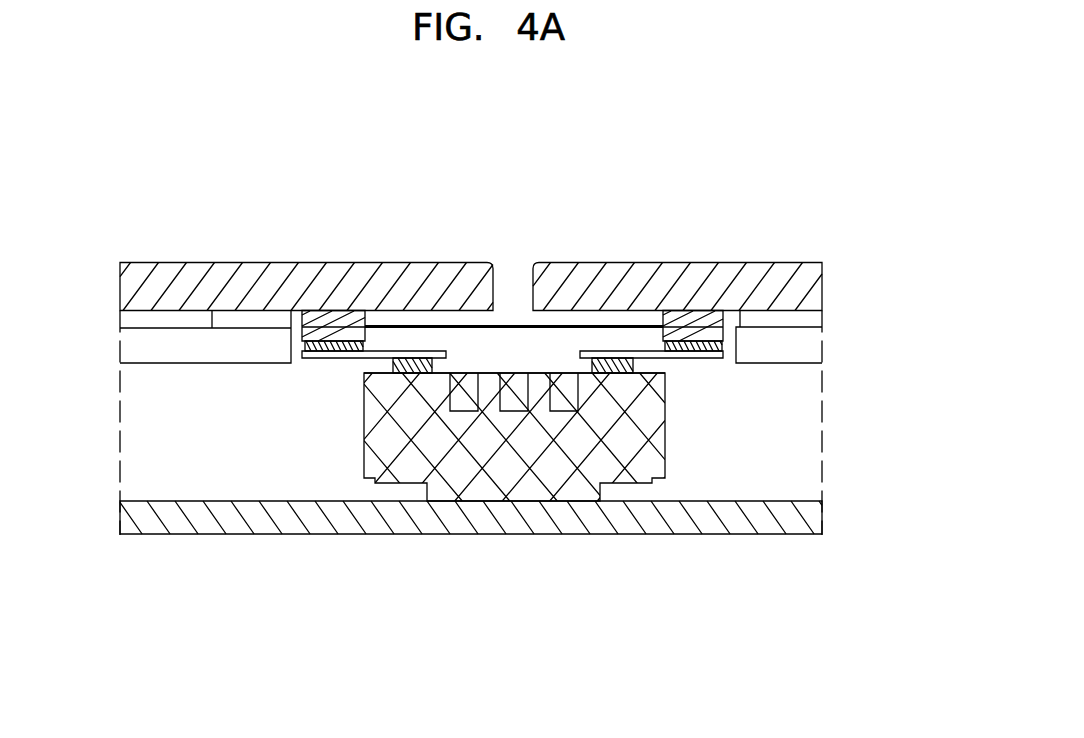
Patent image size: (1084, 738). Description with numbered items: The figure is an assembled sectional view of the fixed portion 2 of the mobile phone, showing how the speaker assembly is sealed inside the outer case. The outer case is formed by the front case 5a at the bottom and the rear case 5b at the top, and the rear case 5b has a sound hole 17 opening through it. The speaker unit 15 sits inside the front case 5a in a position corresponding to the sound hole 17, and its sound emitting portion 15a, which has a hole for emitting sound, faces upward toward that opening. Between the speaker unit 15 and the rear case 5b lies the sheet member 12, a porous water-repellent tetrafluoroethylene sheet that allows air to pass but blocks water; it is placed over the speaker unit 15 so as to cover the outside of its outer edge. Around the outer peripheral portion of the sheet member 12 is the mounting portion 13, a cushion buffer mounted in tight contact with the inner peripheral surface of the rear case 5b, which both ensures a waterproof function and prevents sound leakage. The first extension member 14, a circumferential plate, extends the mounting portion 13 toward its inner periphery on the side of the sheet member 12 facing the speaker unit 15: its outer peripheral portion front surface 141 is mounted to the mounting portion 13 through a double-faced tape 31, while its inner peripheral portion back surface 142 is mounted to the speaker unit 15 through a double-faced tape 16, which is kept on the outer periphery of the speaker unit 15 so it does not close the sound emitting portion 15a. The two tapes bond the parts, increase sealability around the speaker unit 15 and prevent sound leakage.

The fixed portion 2 is at (233, 242).
The front case 5a is at (750, 535).
The rear case 5b is at (725, 280).
The sheet member 12 is at (515, 323).
The mounting portion 13 is at (366, 330).
The first extension member 14 is at (308, 362).
The outer peripheral portion front surface 141 is at (332, 345).
The inner peripheral portion back surface 142 is at (393, 358).
The speaker unit 15 is at (537, 457).
The sound emitting portion 15a is at (472, 375).
The double-faced tape 16 is at (410, 374).
The sound hole 17 is at (530, 300).
The double-faced tape 31 is at (363, 350).